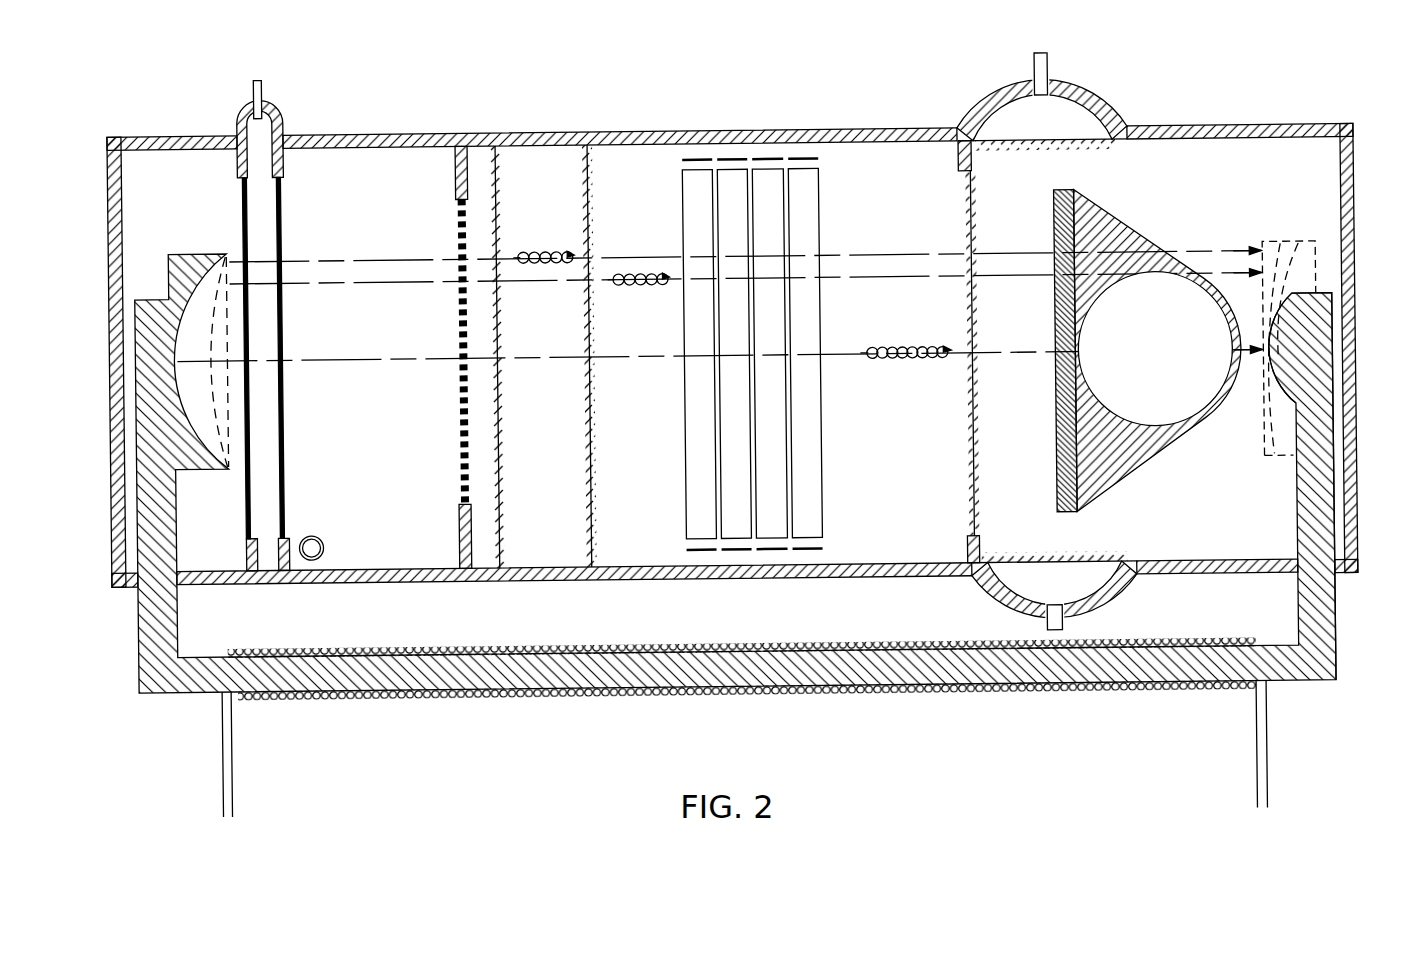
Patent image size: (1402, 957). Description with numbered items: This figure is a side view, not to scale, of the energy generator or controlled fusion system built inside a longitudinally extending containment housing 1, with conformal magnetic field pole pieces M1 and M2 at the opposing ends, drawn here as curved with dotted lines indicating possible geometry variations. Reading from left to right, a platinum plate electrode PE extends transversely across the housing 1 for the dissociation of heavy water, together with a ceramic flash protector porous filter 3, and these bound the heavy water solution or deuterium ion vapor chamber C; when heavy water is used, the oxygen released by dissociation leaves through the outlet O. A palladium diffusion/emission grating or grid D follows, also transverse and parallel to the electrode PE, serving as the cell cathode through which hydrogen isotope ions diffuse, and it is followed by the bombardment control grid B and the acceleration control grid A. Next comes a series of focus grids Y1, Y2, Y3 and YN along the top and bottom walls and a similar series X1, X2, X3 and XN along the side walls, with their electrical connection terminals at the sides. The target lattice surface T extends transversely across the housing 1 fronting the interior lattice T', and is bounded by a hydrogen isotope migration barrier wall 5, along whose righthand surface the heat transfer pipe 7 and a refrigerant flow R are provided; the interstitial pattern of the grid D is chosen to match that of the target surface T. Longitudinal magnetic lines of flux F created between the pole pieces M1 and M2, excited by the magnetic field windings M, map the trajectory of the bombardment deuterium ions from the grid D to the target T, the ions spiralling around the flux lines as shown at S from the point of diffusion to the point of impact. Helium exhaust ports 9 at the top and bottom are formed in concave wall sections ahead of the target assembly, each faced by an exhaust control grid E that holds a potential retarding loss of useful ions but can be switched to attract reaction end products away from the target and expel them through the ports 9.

The housing 1 is at (314, 137).
The oxygen outlet O is at (258, 81).
The platinum plate electrode PE is at (243, 510).
The ceramic flash protector porous filter 3 is at (281, 459).
The magnet pole piece M1 is at (150, 358).
The magnet pole piece M2 is at (1311, 365).
The palladium diffusion/emission grating or grid D is at (458, 451).
The heavy water dissociation cell chamber C is at (377, 391).
The magnetic lines of flux F is at (303, 262).
The bombardment control grid B is at (498, 167).
The acceleration control grid A is at (590, 167).
The focus grid X1 is at (702, 410).
The focus grid X2 is at (735, 434).
The focus grid X3 is at (772, 465).
The focus grid XN is at (808, 510).
The focus grid Y1 is at (697, 166).
The focus grid Y2 is at (730, 166).
The focus grid Y3 is at (766, 166).
The focus grid YN is at (803, 166).
The spiralling ion trajectory S is at (906, 354).
The helium exhaust port 9 is at (1044, 68).
The exhaust control grid E is at (1068, 150).
The hydrogen isotope migration barrier wall 5 is at (1076, 228).
The refrigerant flow R is at (1155, 364).
The target lattice surface T is at (1048, 351).
The interior lattice T' is at (1042, 317).
The heat transfer pipe 7 is at (1227, 396).
The magnetic field electrical windings M is at (243, 655).